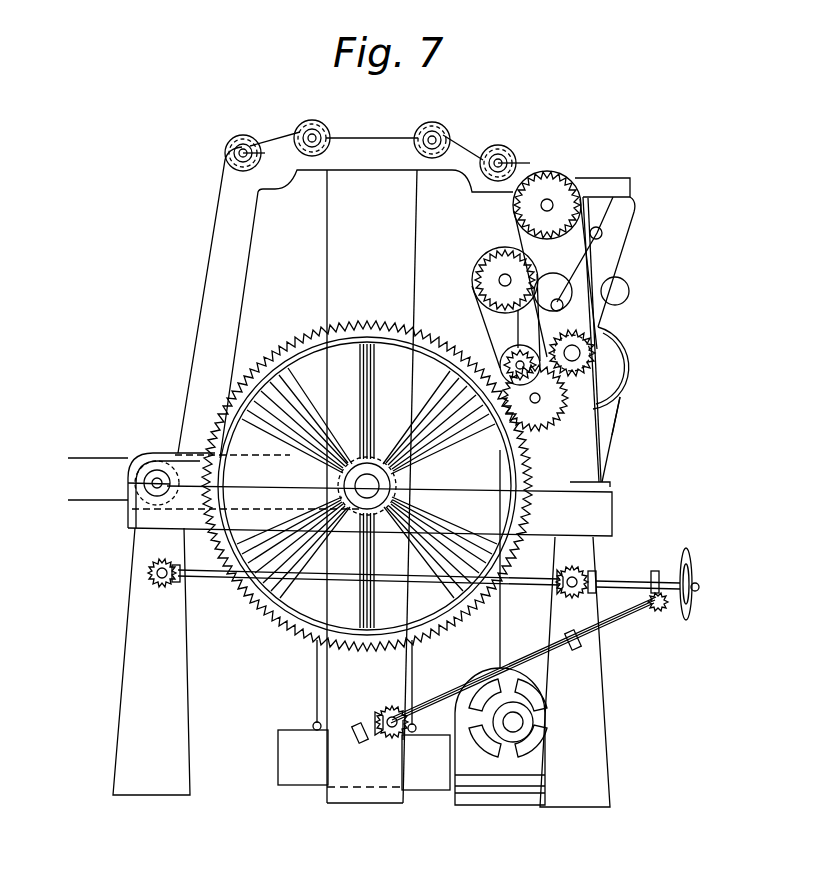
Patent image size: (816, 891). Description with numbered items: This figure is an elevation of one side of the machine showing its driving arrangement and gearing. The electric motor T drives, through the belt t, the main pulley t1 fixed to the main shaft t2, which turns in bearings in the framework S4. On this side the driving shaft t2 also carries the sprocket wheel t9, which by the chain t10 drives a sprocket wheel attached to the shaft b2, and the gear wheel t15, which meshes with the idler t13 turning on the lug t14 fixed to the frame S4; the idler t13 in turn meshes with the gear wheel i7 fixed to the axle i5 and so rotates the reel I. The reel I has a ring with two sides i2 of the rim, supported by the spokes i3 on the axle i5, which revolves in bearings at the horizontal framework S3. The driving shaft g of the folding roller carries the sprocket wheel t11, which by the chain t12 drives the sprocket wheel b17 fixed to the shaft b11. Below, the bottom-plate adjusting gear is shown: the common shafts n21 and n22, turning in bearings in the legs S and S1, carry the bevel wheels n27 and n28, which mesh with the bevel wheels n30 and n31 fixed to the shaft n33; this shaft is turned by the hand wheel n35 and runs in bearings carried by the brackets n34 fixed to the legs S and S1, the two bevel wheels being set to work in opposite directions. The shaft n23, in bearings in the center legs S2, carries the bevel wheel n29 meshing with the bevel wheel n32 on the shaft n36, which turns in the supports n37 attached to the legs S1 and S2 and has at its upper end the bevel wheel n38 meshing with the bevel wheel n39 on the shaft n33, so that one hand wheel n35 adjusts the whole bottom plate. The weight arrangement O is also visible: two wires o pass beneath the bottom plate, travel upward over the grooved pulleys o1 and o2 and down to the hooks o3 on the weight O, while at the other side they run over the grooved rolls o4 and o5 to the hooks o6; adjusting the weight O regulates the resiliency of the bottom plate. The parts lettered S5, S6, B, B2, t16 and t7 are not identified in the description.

The frame upright S5 is at (218, 222).
The pulley rail S6 is at (366, 142).
The grooved pulley o2 is at (240, 140).
The grooved pulley o1 is at (312, 122).
The grooved roll o4 is at (437, 127).
The grooved roll o5 is at (506, 150).
The wire o is at (470, 150).
The hook o3 is at (313, 722).
The hook o6 is at (415, 726).
The weight O is at (303, 757).
The framework S4 is at (622, 226).
The horizontal framework S3 is at (618, 515).
The leg S is at (130, 690).
The leg S1 is at (597, 735).
The center leg S2 is at (368, 795).
The electric motor T is at (512, 778).
The reel I is at (347, 336).
The side of the rim i2 is at (372, 328).
The gear wheel i7 is at (275, 350).
The spoke i3 is at (330, 440).
The axle i5 is at (372, 468).
The shaft b2 is at (551, 200).
The belt B is at (596, 208).
The pivot t16 is at (596, 175).
The sprocket wheel b17 is at (492, 258).
The shaft b11 is at (499, 278).
The belt B2 is at (524, 228).
The driving shaft of the folding roller g is at (514, 362).
The sprocket wheel t11 is at (510, 347).
The chain t12 is at (500, 342).
The chain t10 is at (590, 262).
The roller t7 is at (628, 282).
The main pulley t1 is at (612, 322).
The main shaft t2 is at (594, 347).
The sprocket wheel t9 is at (600, 353).
The gear wheel t15 is at (596, 360).
The belt t is at (612, 412).
The lug t14 is at (560, 402).
The idler t13 is at (548, 418).
The shaft n33 is at (220, 578).
The bevel wheel n27 is at (152, 566).
The common shaft n21 is at (156, 578).
The bevel wheel n30 is at (176, 584).
The bevel wheel n31 is at (560, 592).
The bevel wheel n28 is at (575, 572).
The bracket n34 is at (597, 576).
The common shaft n22 is at (568, 600).
The bevel wheel n39 is at (662, 578).
The hand wheel n35 is at (692, 560).
The bevel wheel n38 is at (664, 610).
The shaft n36 is at (625, 622).
The support n37 is at (580, 646).
The bevel wheel n32 is at (385, 712).
The common shaft n23 is at (380, 735).
The bevel wheel n29 is at (406, 738).